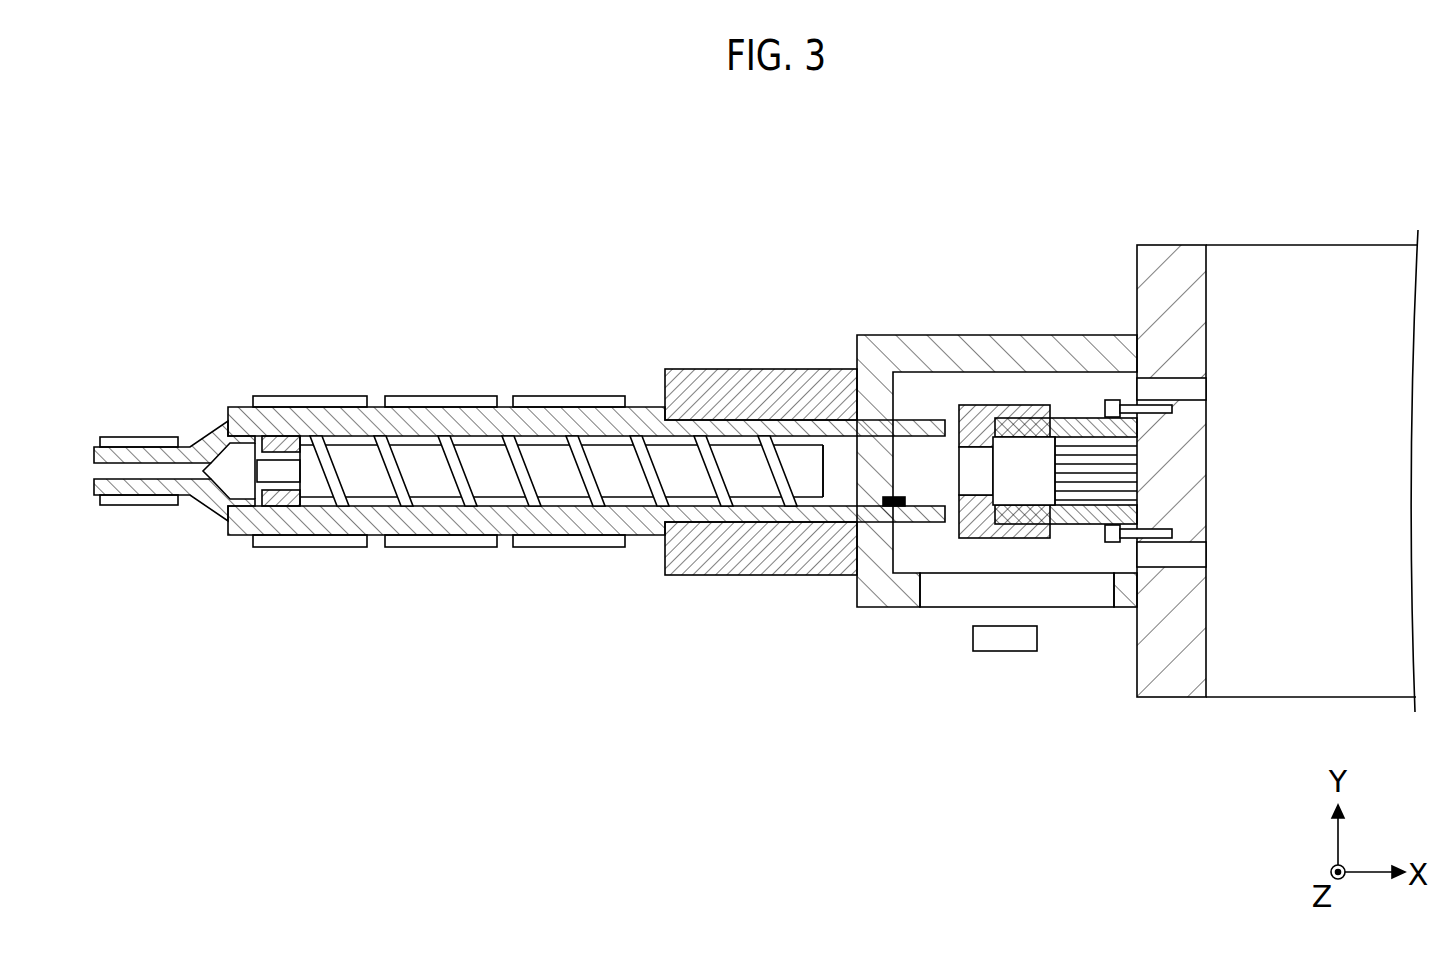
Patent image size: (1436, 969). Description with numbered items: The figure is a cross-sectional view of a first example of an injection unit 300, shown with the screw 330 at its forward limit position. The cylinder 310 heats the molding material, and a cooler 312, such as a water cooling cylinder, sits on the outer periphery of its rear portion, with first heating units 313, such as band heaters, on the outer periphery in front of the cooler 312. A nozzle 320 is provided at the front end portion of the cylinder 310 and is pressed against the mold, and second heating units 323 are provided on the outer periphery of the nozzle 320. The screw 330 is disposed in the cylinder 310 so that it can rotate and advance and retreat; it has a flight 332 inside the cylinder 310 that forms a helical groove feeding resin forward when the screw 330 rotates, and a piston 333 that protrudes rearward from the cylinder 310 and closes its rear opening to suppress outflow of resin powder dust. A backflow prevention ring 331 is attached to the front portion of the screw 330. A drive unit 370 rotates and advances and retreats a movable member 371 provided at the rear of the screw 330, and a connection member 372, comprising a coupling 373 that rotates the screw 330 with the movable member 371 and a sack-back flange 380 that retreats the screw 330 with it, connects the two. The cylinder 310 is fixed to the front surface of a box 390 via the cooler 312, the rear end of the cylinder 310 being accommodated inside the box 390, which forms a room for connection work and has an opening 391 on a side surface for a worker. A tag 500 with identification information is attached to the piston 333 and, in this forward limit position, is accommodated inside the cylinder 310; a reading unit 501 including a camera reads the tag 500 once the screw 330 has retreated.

The injection unit 300 is at (163, 265).
The cylinder 310 is at (341, 406).
The cooler 312 is at (725, 386).
The first heating units 313 is at (342, 548).
The nozzle 320 is at (139, 452).
The second heating units 323 is at (141, 502).
The screw 330 is at (576, 405).
The backflow prevention ring 331 is at (276, 500).
The flight 332 is at (509, 447).
The piston 333 is at (843, 442).
The drive unit 370 is at (1261, 445).
The movable member 371 is at (1192, 470).
The connection member 372 is at (1048, 381).
The coupling 373 is at (1075, 420).
The sack-back flange 380 is at (1012, 408).
The box 390 is at (880, 601).
The opening 391 is at (944, 601).
The tag 500 is at (898, 510).
The reading unit 501 is at (1004, 652).